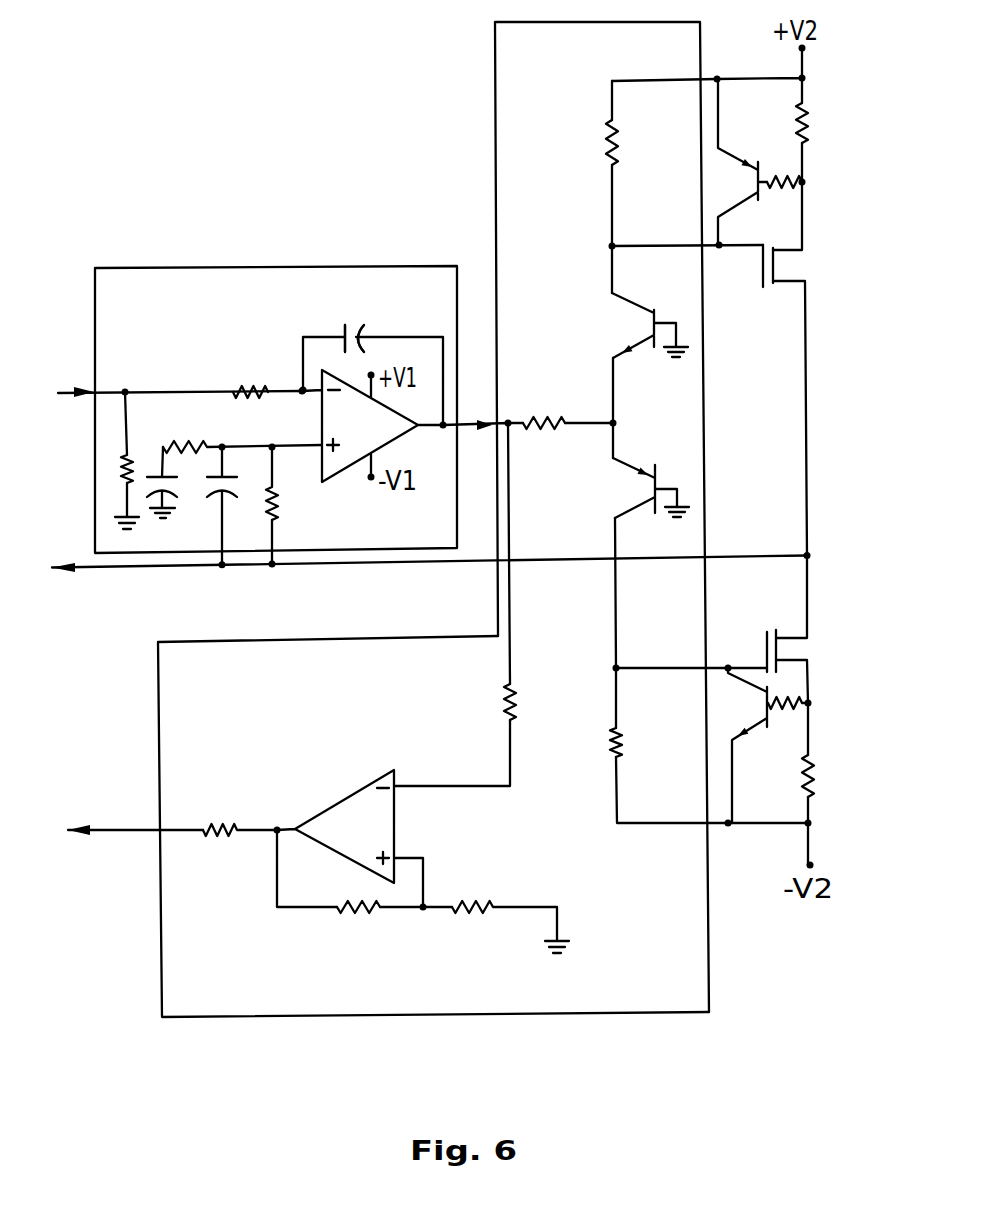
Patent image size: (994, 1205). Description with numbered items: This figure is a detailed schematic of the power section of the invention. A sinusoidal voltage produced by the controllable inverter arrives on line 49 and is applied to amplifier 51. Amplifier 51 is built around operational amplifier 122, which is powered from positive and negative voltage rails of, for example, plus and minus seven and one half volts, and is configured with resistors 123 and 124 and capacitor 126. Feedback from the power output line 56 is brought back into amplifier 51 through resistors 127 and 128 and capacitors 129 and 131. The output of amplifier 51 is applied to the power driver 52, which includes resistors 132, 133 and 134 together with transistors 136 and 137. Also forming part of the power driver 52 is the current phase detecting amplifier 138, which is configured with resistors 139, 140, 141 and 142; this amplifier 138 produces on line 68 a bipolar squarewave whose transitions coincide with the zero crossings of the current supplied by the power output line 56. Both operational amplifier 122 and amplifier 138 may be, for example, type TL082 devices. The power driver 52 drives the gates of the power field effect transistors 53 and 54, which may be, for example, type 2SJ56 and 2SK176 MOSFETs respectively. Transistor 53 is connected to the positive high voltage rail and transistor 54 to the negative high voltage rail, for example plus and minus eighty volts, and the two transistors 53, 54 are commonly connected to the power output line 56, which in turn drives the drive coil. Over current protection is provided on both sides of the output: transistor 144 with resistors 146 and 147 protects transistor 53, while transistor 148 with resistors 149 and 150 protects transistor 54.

The line 49 is at (70, 396).
The amplifier 51 is at (195, 327).
The power driver 52 is at (260, 702).
The power field effect transistor 53 is at (790, 265).
The power field effect transistor 54 is at (792, 650).
The power output line 56 is at (80, 570).
The line 68 is at (142, 833).
The operational amplifier 122 is at (347, 457).
The resistor 123 is at (132, 455).
The resistor 124 is at (240, 388).
The capacitor 126 is at (407, 296).
The resistor 127 is at (205, 438).
The resistor 128 is at (283, 493).
The capacitor 129 is at (240, 485).
The capacitor 131 is at (152, 503).
The resistor 132 is at (623, 138).
The resistor 133 is at (525, 420).
The resistor 134 is at (632, 742).
The transistor 136 is at (667, 279).
The transistor 137 is at (647, 488).
The current phase detecting amplifier 138 is at (348, 813).
The resistor 139 is at (500, 707).
The resistor 140 is at (337, 913).
The resistor 141 is at (467, 890).
The resistor 142 is at (205, 823).
The transistor 144 is at (768, 133).
The resistor 146 is at (780, 193).
The resistor 147 is at (810, 142).
The transistor 148 is at (763, 707).
The resistor 149 is at (797, 728).
The resistor 150 is at (822, 784).